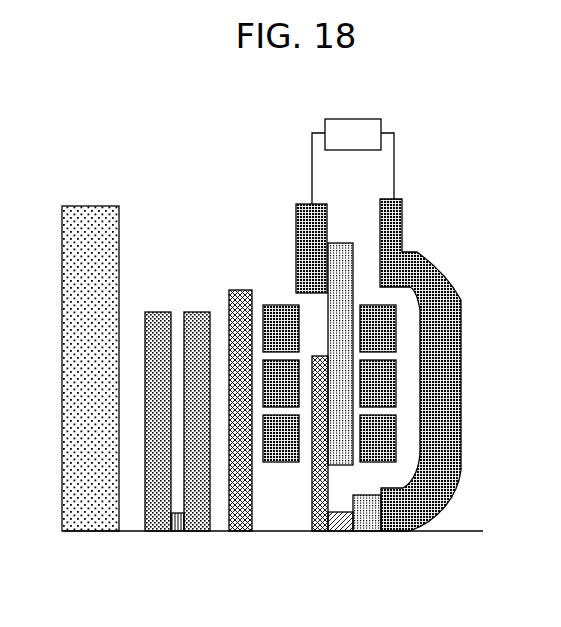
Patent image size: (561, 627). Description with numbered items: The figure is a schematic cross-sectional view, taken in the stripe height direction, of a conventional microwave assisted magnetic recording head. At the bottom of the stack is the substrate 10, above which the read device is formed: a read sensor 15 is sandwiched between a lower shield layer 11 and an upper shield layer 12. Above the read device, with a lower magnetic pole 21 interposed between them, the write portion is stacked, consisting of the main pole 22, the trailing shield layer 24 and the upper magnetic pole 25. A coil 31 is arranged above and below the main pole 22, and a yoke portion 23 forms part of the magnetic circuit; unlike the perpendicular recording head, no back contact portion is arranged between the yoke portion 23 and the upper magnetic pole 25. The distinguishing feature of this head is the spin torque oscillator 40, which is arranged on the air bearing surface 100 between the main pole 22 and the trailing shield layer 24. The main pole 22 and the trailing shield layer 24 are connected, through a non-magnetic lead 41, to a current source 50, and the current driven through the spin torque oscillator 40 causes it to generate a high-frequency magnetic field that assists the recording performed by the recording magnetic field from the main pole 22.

The substrate 10 is at (86, 521).
The lower shield layer 11 is at (158, 312).
The upper shield layer 12 is at (197, 312).
The read sensor 15 is at (178, 515).
The lower magnetic pole 21 is at (238, 523).
The main pole 22 is at (318, 535).
The yoke portion 23 is at (341, 252).
The trailing shield layer 24 is at (373, 535).
The upper magnetic pole 25 is at (437, 514).
The coil 31 is at (275, 305).
The spin torque oscillator 40 is at (343, 535).
The non-magnetic lead 41 is at (297, 215).
The current source 50 is at (325, 127).
The air bearing surface 100 is at (471, 535).